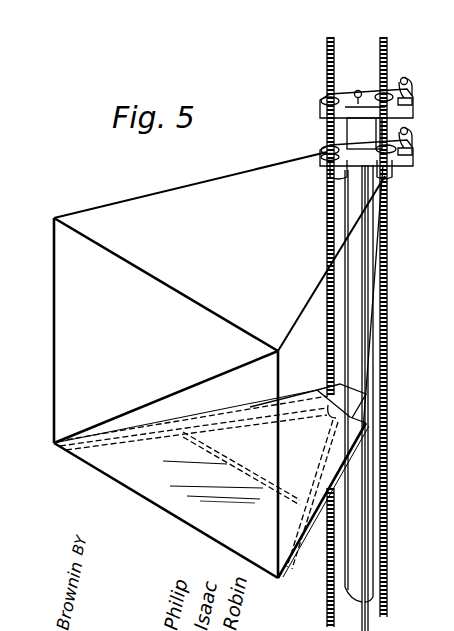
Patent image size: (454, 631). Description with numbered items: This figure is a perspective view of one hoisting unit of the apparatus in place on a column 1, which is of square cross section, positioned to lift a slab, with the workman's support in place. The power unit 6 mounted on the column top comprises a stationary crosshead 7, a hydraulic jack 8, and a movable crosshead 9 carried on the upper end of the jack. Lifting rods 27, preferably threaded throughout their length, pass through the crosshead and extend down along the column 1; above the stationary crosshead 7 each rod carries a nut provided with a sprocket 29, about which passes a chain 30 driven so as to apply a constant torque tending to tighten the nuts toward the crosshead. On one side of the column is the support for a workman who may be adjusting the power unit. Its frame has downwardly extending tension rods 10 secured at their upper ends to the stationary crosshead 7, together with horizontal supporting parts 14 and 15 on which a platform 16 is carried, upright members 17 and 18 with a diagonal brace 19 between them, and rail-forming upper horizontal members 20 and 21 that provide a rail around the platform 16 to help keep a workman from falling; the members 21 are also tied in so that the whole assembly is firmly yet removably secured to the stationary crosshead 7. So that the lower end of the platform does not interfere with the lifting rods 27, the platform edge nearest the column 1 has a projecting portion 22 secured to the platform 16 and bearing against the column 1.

The column 1 is at (348, 580).
The power unit 6 is at (405, 68).
The stationary crosshead 7 is at (390, 167).
The hydraulic jack 8 is at (350, 137).
The movable crosshead 9 is at (392, 117).
The tension rods 10 is at (377, 268).
The horizontal supporting part 14 is at (294, 548).
The horizontal supporting part 15 is at (88, 473).
The platform 16 is at (157, 485).
The upright member 17 is at (57, 303).
The upright member 18 is at (273, 518).
The diagonal brace 19 is at (170, 393).
The upper horizontal member 20 is at (177, 288).
The upper horizontal member 21 is at (208, 181).
The projecting portion 22 is at (367, 403).
The lifting rods 27 is at (381, 64).
The sprocket 29 is at (318, 152).
The chain 30 is at (347, 162).